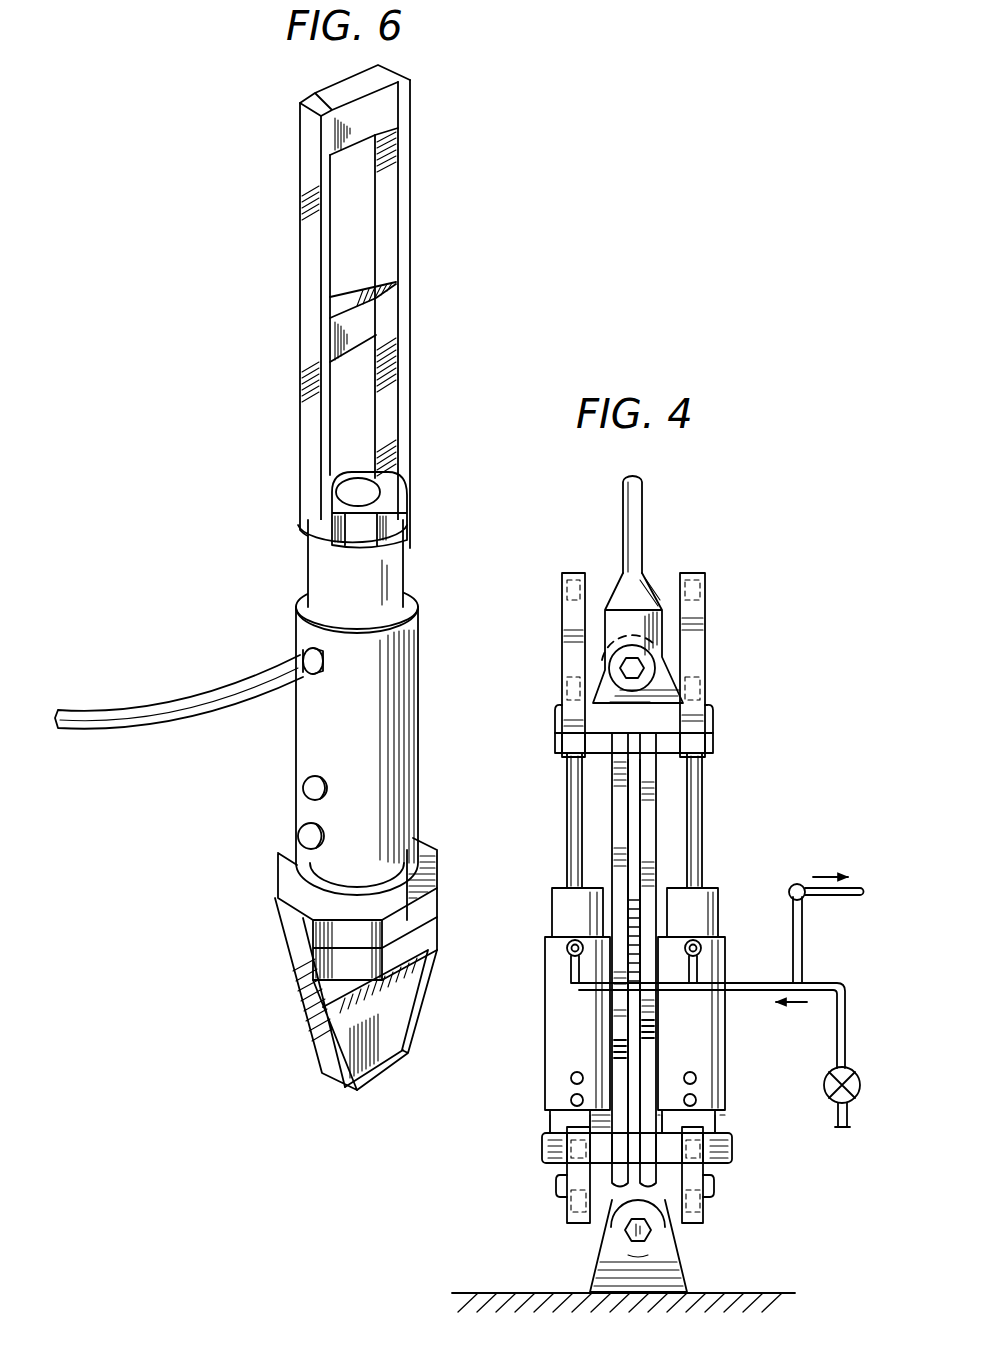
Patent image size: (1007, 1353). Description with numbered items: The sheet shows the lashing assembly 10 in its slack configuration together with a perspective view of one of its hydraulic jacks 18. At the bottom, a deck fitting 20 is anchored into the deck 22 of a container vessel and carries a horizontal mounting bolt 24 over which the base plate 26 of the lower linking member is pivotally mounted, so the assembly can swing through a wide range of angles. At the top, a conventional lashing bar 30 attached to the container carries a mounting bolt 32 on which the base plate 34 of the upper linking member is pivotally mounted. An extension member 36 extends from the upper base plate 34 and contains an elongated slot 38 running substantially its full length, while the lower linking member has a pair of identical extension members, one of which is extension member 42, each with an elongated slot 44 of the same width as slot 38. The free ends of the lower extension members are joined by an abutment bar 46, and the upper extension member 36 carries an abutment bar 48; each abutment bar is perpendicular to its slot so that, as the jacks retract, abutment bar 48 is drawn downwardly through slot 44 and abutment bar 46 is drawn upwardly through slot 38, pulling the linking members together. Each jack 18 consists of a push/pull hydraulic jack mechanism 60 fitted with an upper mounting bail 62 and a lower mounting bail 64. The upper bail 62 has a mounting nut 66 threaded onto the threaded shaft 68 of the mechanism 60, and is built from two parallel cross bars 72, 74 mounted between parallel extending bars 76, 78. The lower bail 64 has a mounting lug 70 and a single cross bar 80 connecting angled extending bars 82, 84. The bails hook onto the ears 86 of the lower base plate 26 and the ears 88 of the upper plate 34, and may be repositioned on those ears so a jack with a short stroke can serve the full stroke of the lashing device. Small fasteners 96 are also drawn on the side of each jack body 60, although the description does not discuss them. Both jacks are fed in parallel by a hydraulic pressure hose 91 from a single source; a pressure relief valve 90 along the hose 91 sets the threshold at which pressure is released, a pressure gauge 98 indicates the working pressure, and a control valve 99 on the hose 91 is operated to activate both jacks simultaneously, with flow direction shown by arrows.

In FIG. 4, the lashing assembly 10 is at (630, 884).
In FIG. 6, the hydraulic jack 18 is at (268, 661).
In FIG. 4, the hydraulic jack 18 is at (625, 1019).
In FIG. 4, the deck fitting 20 is at (670, 1270).
In FIG. 4, the deck 22 is at (478, 1293).
In FIG. 4, the horizontal mounting bolt 24 is at (625, 1232).
In FIG. 4, the base plate 26 is at (730, 1150).
In FIG. 4, the lashing bar 30 is at (645, 512).
In FIG. 4, the mounting bolt 32 is at (657, 662).
In FIG. 4, the base plate 34 is at (660, 708).
In FIG. 4, the extension member 36 is at (614, 793).
In FIG. 4, the elongated slot 38 is at (637, 838).
In FIG. 4, the extension member 42 is at (655, 1010).
In FIG. 4, the elongated slot 44 is at (625, 1050).
In FIG. 4, the abutment bar 46 is at (640, 898).
In FIG. 4, the abutment bar 48 is at (577, 960).
In FIG. 6, the push/pull hydraulic jack mechanism 60 is at (400, 714).
In FIG. 4, the push/pull hydraulic jack mechanism 60 is at (560, 1092).
In FIG. 6, the upper mounting bail 62 is at (360, 306).
In FIG. 4, the upper mounting bail 62 is at (553, 640).
In FIG. 6, the lower mounting bail 64 is at (316, 974).
In FIG. 4, the lower mounting bail 64 is at (535, 1171).
In FIG. 6, the mounting nut 66 is at (398, 497).
In FIG. 6, the threaded shaft 68 is at (385, 492).
In FIG. 6, the mounting lug 70 is at (422, 905).
In FIG. 6, the cross bar 72 is at (395, 108).
In FIG. 6, the cross bar 74 is at (378, 318).
In FIG. 6, the extending bar 76 is at (306, 330).
In FIG. 6, the extending bar 78 is at (392, 397).
In FIG. 6, the cross bar 80 is at (388, 1045).
In FIG. 6, the angled extending bar 82 is at (305, 1040).
In FIG. 6, the angled extending bar 84 is at (425, 955).
In FIG. 4, the ear 86 is at (556, 710).
In FIG. 4, the ear 88 is at (555, 1190).
In FIG. 4, the pressure relief valve 90 is at (800, 885).
In FIG. 6, the hydraulic pressure hose 91 is at (215, 690).
In FIG. 4, the hydraulic pressure hose 91 is at (803, 940).
In FIG. 6, the screw 96 is at (300, 790).
In FIG. 4, the screw 96 is at (571, 1078).
In FIG. 6, the pressure gauge 98 is at (298, 833).
In FIG. 4, the pressure gauge 98 is at (571, 1102).
In FIG. 4, the control valve 99 is at (827, 1074).